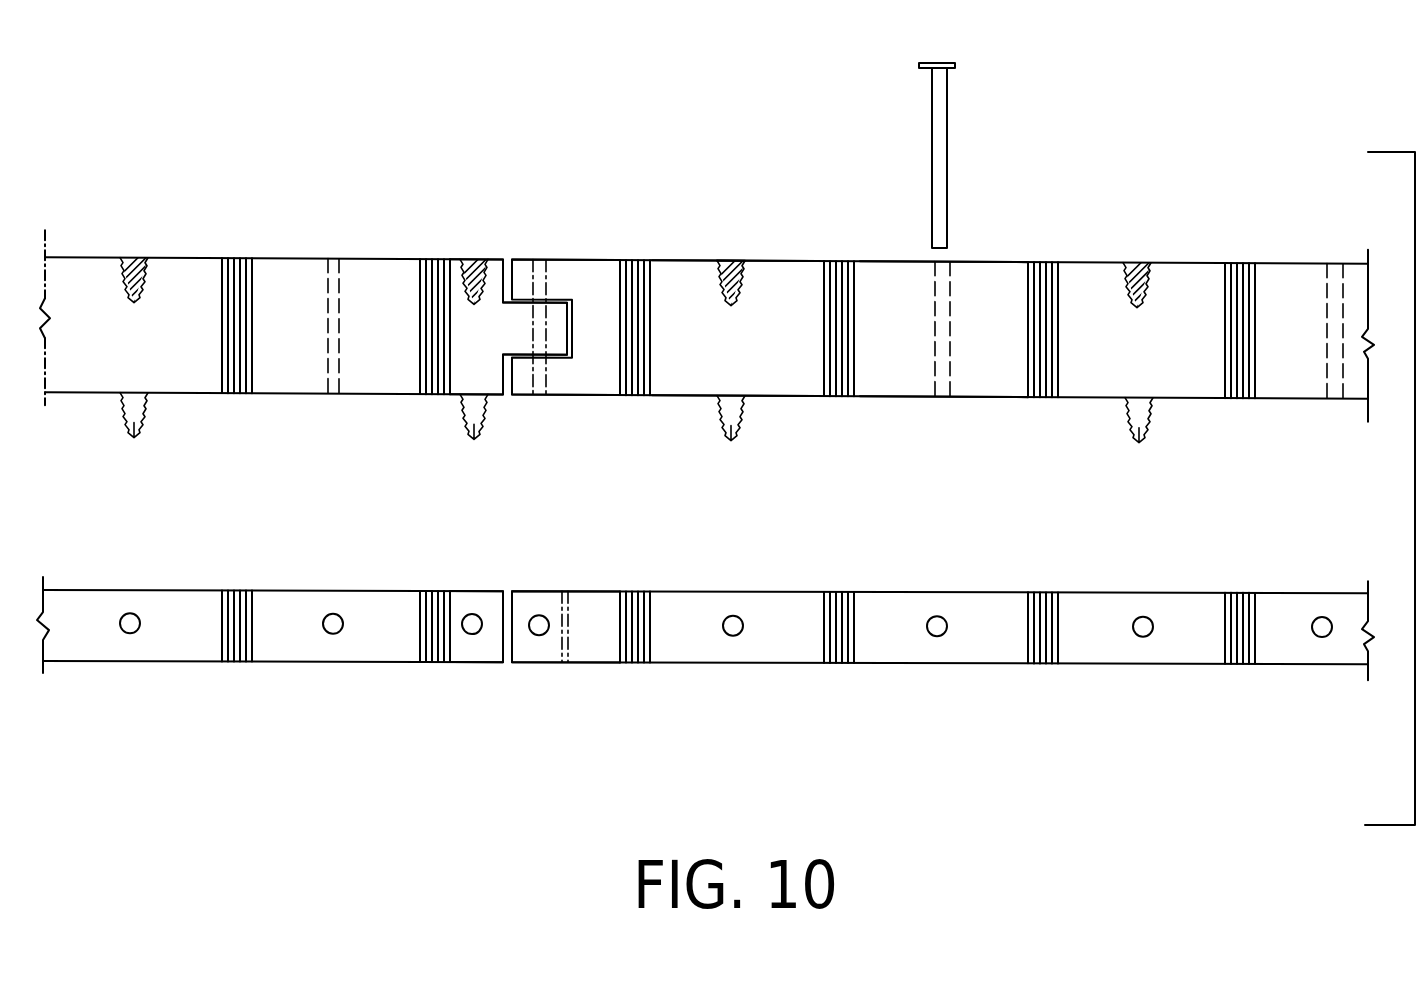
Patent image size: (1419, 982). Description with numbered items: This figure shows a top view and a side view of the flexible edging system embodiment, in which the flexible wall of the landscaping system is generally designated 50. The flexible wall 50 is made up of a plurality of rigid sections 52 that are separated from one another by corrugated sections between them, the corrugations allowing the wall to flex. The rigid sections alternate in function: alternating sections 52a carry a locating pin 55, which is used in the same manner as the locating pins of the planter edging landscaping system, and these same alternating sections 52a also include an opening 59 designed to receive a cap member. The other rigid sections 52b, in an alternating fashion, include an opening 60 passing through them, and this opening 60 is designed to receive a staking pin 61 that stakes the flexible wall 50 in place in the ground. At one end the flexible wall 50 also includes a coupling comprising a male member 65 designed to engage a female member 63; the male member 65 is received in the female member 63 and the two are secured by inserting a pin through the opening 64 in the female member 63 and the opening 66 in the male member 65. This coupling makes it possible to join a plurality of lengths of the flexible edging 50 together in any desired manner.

The flexible wall 50 is at (1236, 155).
The rigid sections 52 is at (890, 387).
The alternating sections 52a is at (760, 382).
The rigid sections 52b is at (915, 380).
The locating pin 55 is at (720, 430).
The opening 59 is at (737, 258).
The opening 60 is at (332, 394).
The staking pin 61 is at (943, 53).
The female member 63 is at (587, 268).
The opening 64 is at (535, 270).
The male member 65 is at (463, 320).
The opening 66 is at (530, 332).